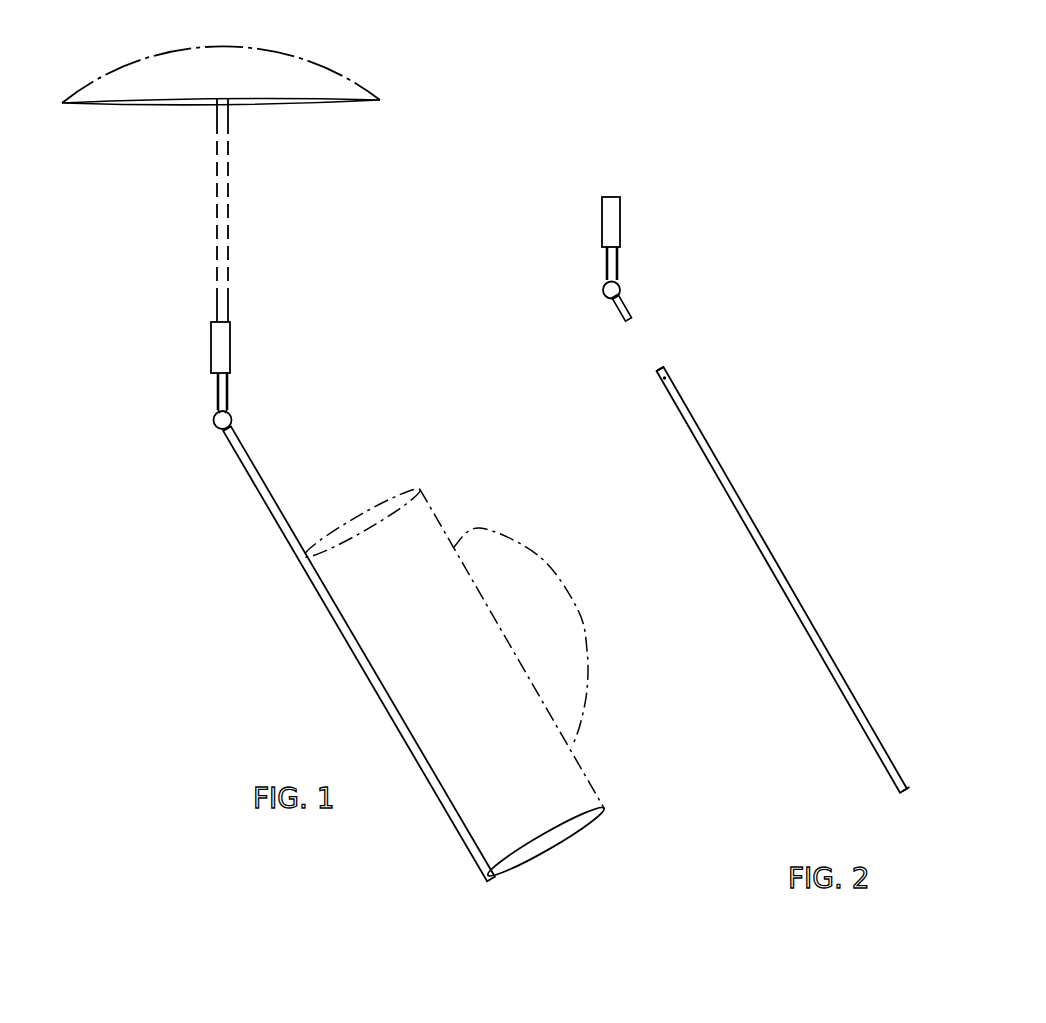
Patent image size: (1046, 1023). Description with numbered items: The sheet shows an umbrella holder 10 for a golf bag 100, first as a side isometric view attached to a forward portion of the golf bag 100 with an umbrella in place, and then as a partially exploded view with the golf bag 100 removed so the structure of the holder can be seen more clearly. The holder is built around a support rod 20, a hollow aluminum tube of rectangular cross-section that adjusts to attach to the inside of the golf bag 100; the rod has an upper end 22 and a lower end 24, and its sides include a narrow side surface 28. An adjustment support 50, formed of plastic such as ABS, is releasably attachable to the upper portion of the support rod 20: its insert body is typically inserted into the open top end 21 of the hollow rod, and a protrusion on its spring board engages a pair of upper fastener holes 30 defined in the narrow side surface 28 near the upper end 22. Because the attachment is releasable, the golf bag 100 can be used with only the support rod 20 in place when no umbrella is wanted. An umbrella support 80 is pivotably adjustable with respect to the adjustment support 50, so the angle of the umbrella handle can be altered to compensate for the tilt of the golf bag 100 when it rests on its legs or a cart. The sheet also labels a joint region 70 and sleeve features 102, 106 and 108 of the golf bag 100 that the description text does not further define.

In FIG. 1, the umbrella holder 10 is at (420, 235).
In FIG. 1, the support rod 20 is at (277, 492).
In FIG. 2, the support rod 20 is at (718, 450).
In FIG. 2, the open top end 21 is at (658, 365).
In FIG. 2, the upper end 22 is at (657, 377).
In FIG. 2, the lower end 24 is at (907, 790).
In FIG. 2, the narrow side surface 28 is at (748, 518).
In FIG. 2, the upper fastener holes 30 is at (665, 380).
In FIG. 1, the adjustment support 50 is at (233, 349).
In FIG. 2, the adjustment support 50 is at (633, 310).
In FIG. 1, the joint 70 is at (213, 423).
In FIG. 1, the umbrella support 80 is at (237, 419).
In FIG. 2, the umbrella support 80 is at (627, 218).
In FIG. 1, the golf bag 100 is at (453, 681).
In FIG. 1, the first end of sleeve 102 is at (390, 680).
In FIG. 1, the bore 106 is at (453, 548).
In FIG. 1, the second end of sleeve 108 is at (573, 748).